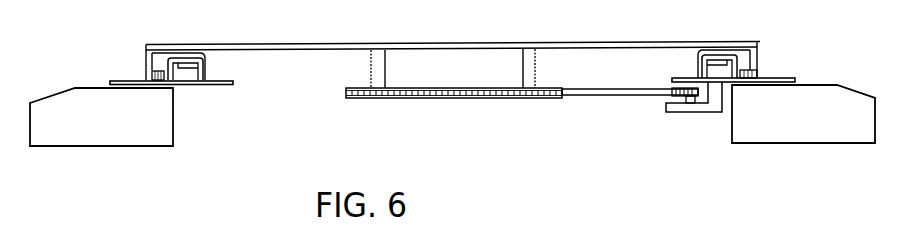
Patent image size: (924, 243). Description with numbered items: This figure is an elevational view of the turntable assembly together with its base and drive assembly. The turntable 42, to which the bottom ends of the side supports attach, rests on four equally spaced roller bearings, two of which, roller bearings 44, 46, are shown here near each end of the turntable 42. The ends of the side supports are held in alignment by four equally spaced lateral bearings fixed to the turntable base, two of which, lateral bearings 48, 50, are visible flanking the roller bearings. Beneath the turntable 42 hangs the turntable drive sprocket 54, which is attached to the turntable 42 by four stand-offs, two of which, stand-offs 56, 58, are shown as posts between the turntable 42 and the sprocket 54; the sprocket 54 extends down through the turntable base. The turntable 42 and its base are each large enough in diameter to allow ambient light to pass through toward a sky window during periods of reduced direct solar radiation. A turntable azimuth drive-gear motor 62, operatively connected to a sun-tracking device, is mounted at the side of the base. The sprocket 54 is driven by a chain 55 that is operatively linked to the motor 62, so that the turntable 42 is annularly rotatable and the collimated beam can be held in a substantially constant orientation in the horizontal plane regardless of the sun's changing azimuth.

The turntable 42 is at (293, 43).
The roller bearing 44 is at (187, 67).
The roller bearing 46 is at (722, 65).
The lateral bearing 48 is at (752, 63).
The lateral bearing 50 is at (148, 70).
The turntable drive sprocket 54 is at (493, 98).
The chain 55 is at (597, 95).
The stand-off 56 is at (537, 72).
The stand-off 58 is at (370, 68).
The turntable azimuth drive-gear motor 62 is at (714, 100).